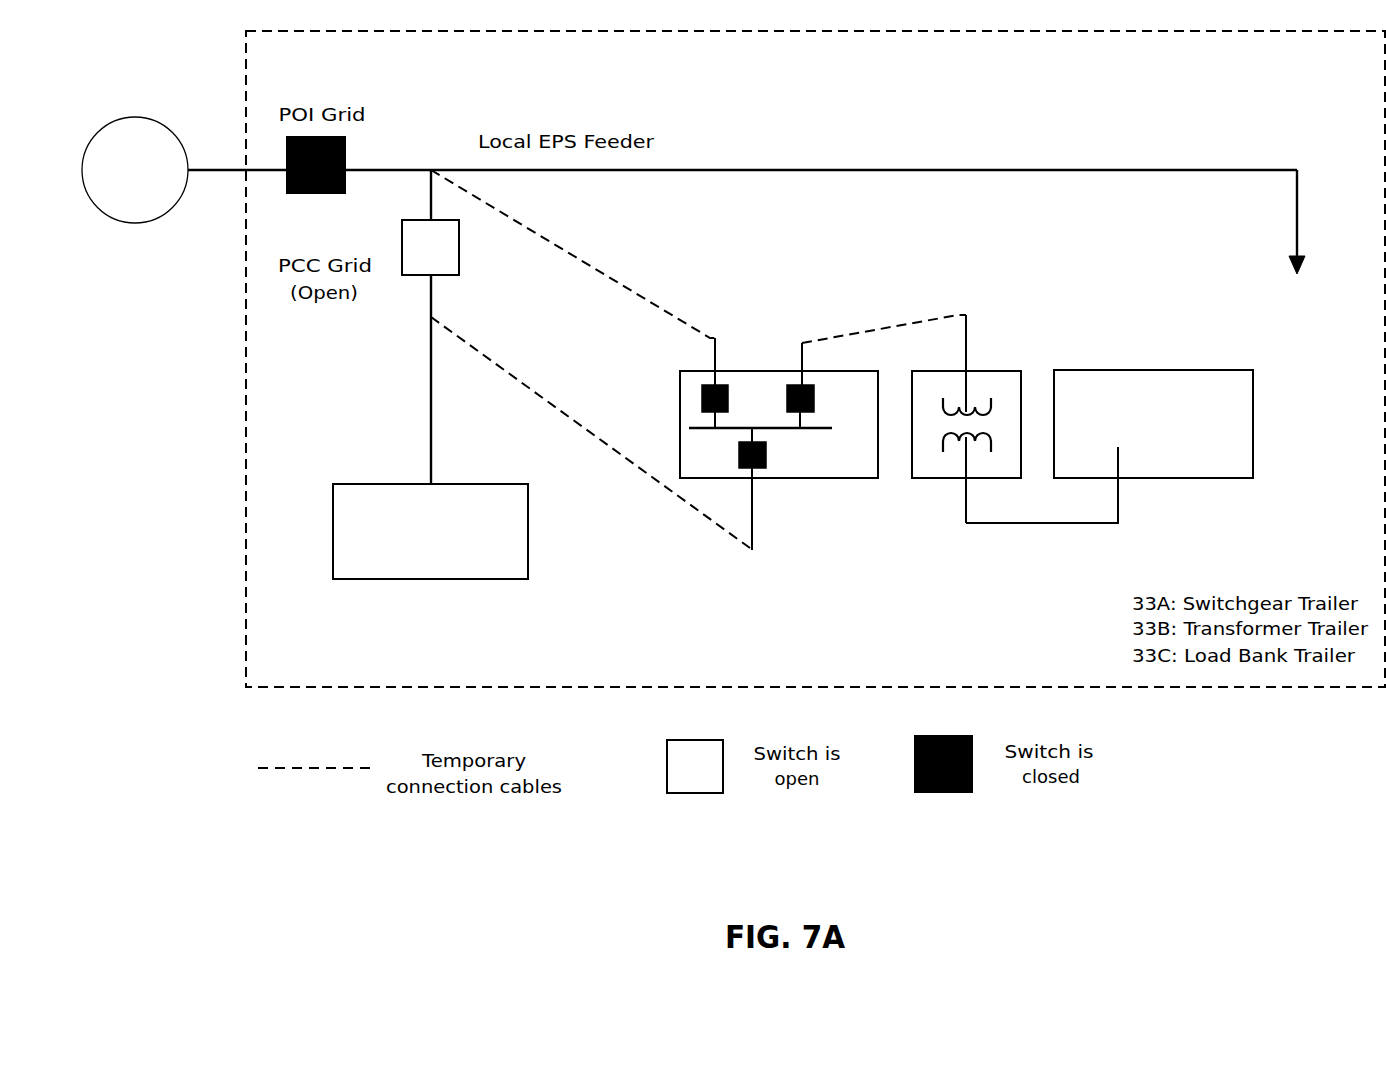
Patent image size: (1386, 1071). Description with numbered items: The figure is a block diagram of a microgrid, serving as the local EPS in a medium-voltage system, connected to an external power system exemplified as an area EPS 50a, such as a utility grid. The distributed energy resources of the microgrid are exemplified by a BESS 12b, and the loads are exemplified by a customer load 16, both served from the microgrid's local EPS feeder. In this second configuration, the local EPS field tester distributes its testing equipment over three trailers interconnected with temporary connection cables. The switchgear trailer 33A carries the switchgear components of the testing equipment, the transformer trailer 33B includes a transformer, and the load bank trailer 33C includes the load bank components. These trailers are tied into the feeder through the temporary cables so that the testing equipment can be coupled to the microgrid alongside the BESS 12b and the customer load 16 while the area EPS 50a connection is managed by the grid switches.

The area EPS 50a is at (119, 207).
The customer load 16 is at (1337, 331).
The BESS 12b is at (448, 556).
The switchgear trailer 33A is at (838, 476).
The transformer trailer 33B is at (979, 476).
The load bank trailer 33C is at (1208, 476).